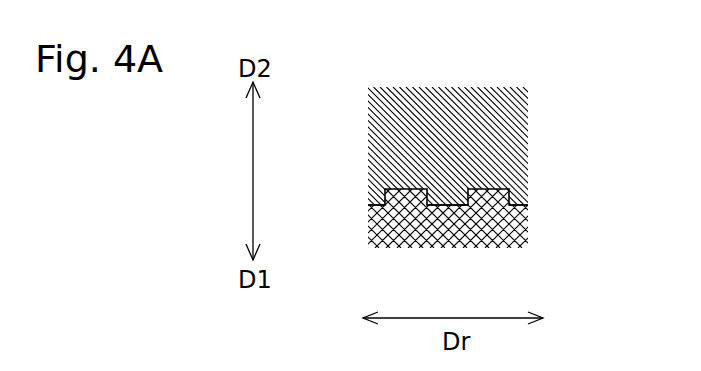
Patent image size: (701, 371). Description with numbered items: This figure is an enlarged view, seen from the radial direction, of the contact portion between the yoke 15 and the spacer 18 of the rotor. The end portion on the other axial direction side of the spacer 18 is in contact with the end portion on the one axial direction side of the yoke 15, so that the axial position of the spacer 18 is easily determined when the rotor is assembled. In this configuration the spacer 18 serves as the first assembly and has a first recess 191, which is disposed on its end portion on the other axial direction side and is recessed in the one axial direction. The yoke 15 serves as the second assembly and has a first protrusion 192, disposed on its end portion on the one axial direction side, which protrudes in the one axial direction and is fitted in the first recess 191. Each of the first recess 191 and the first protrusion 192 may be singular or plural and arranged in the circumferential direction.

The yoke 15 is at (447, 92).
The spacer 18 is at (448, 236).
The first recess 191 is at (440, 207).
The first protrusion 192 is at (438, 196).